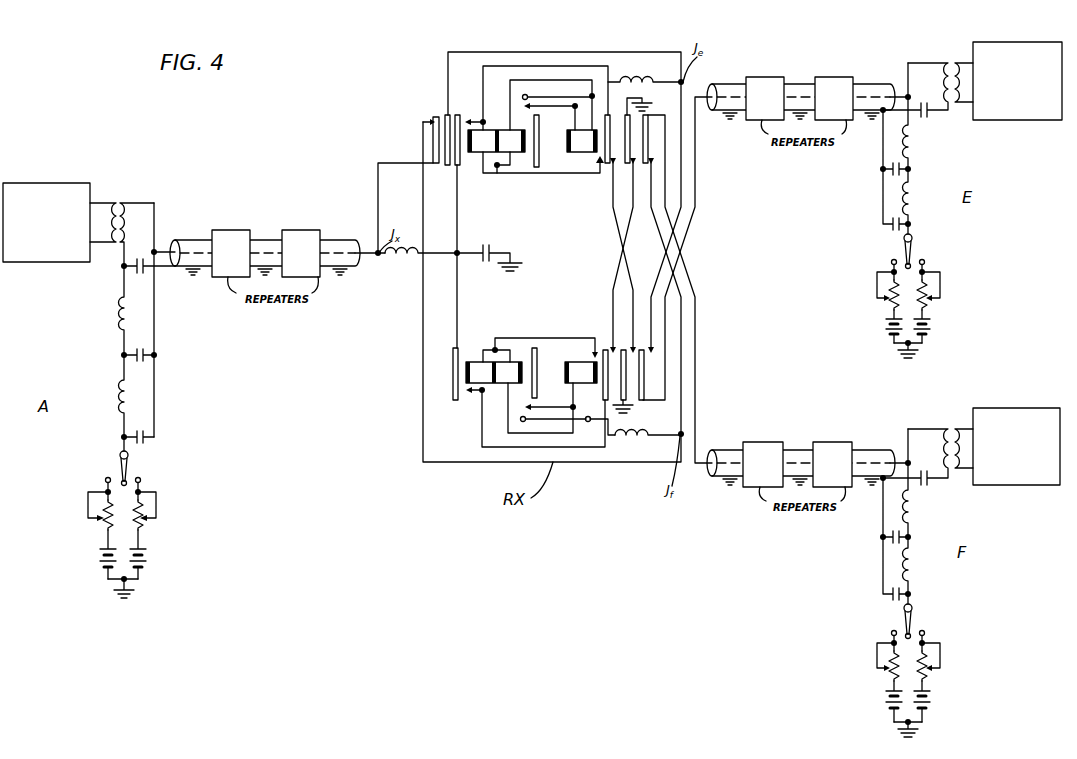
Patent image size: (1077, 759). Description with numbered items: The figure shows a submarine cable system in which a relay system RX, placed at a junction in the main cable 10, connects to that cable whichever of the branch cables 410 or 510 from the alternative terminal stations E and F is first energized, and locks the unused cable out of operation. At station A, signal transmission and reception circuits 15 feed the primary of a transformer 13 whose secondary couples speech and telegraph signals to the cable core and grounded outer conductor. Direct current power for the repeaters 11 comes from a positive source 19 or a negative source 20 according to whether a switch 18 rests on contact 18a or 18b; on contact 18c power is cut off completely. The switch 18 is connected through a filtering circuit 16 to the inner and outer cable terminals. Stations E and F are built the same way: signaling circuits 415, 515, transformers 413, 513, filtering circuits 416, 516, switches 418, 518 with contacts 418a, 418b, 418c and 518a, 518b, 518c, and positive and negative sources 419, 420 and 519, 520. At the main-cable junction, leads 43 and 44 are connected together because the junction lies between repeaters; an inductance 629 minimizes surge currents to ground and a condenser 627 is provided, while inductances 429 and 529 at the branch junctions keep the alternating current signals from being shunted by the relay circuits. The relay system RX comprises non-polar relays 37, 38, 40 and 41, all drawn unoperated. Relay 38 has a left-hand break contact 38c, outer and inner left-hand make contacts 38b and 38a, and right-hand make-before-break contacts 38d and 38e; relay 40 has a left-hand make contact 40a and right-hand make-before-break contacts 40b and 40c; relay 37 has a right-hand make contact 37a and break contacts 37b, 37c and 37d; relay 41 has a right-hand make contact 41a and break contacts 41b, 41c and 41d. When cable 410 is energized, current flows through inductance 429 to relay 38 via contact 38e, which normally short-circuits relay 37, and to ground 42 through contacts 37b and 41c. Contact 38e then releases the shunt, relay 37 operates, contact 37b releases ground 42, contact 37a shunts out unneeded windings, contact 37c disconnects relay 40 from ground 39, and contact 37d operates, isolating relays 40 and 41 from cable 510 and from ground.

The main cable 10 is at (194, 240).
The repeaters 11 is at (283, 212).
The transformer 13 is at (117, 200).
The signal transmission and reception circuits 15 is at (58, 183).
The filtering circuit 16 is at (124, 347).
The switch 18 is at (119, 460).
The contact 18a is at (106, 479).
The contact 18b is at (140, 479).
The contact 18c is at (129, 479).
The positive source 19 is at (98, 561).
The negative source 20 is at (147, 561).
The non-polar relay 37 is at (580, 153).
The right-hand make contact 37a is at (599, 166).
The break contact 37b is at (611, 175).
The break contact 37c is at (632, 168).
The break contact 37d is at (651, 168).
The non-polar relay 38 is at (479, 154).
The inner left-hand make contact 38a is at (457, 113).
The outer left-hand make contact 38b is at (445, 112).
The left-hand break contact 38c is at (431, 116).
The right-hand make-before-break contact 38d is at (531, 122).
The right-hand make-before-break contact 38e is at (527, 97).
The ground 39 is at (644, 104).
The non-polar relay 40 is at (475, 362).
The left-hand make contact 40a is at (467, 396).
The right-hand make-before-break contact 40b is at (561, 409).
The right-hand make-before-break contact 40c is at (525, 396).
The non-polar relay 41 is at (575, 362).
The right-hand make contact 41a is at (594, 352).
The break contact 41b is at (612, 346).
The break contact 41c is at (631, 346).
The break contact 41d is at (650, 346).
The ground 42 is at (636, 412).
The lead 43 is at (382, 163).
The lead 44 is at (380, 257).
The branch cable 410 is at (733, 84).
The transformer 413 is at (947, 61).
The signaling circuit 415 is at (1021, 42).
The filtering circuit 416 is at (892, 190).
The switch 418 is at (903, 249).
The contact 418a is at (891, 262).
The contact 418b is at (926, 262).
The contact 418c is at (913, 263).
The positive source 419 is at (885, 326).
The negative source 420 is at (930, 326).
The inductance 429 is at (635, 80).
The branch cable 510 is at (731, 450).
The transformer 513 is at (947, 427).
The signaling circuit 515 is at (1021, 408).
The filtering circuit 516 is at (892, 552).
The switch 518 is at (905, 619).
The contact 518a is at (891, 633).
The contact 518b is at (926, 633).
The contact 518c is at (913, 633).
The positive source 519 is at (884, 700).
The negative source 520 is at (933, 700).
The inductance 529 is at (643, 438).
The condenser 627 is at (486, 252).
The inductance 629 is at (402, 260).